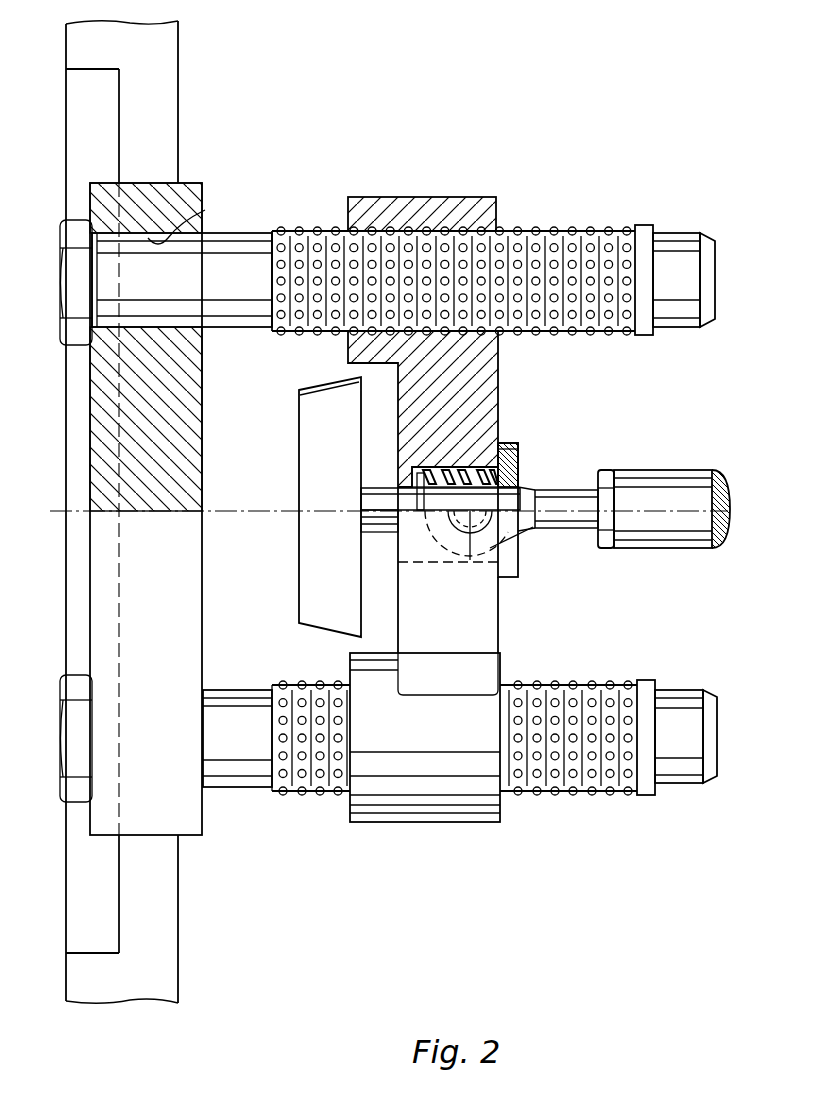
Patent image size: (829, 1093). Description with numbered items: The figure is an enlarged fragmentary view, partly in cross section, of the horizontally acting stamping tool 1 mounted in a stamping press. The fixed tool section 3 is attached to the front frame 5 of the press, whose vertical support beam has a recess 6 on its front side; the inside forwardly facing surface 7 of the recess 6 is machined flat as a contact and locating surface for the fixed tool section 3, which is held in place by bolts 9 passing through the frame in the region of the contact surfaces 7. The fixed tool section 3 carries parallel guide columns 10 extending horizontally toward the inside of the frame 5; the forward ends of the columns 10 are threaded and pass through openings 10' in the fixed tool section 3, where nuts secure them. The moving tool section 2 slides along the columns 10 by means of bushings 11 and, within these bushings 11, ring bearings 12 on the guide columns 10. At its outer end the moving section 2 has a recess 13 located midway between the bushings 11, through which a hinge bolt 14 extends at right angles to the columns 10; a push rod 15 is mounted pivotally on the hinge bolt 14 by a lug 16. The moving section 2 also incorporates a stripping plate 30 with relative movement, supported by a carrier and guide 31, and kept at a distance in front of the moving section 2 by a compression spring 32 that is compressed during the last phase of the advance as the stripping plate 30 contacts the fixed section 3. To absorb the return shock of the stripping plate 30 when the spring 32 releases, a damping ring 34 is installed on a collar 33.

The stamping tool 1 is at (299, 215).
The moving tool section 2 is at (506, 372).
The fixed tool section 3 is at (170, 540).
The front frame 5 is at (163, 42).
The recess 6 is at (88, 108).
The contact surface 7 is at (118, 150).
The bolt 9 is at (70, 233).
The guide column 10 is at (405, 515).
The opening 10' is at (189, 193).
The bushing 11 is at (418, 208).
The ring bearing 12 is at (551, 238).
The recess 13 is at (416, 553).
The hinge bolt 14 is at (472, 560).
The push rod 15 is at (667, 538).
The lug 16 is at (517, 527).
The stripping plate 30 is at (315, 593).
The carrier and guide 31 is at (384, 522).
The compression spring 32 is at (455, 478).
The collar 33 is at (415, 478).
The damping ring 34 is at (410, 484).